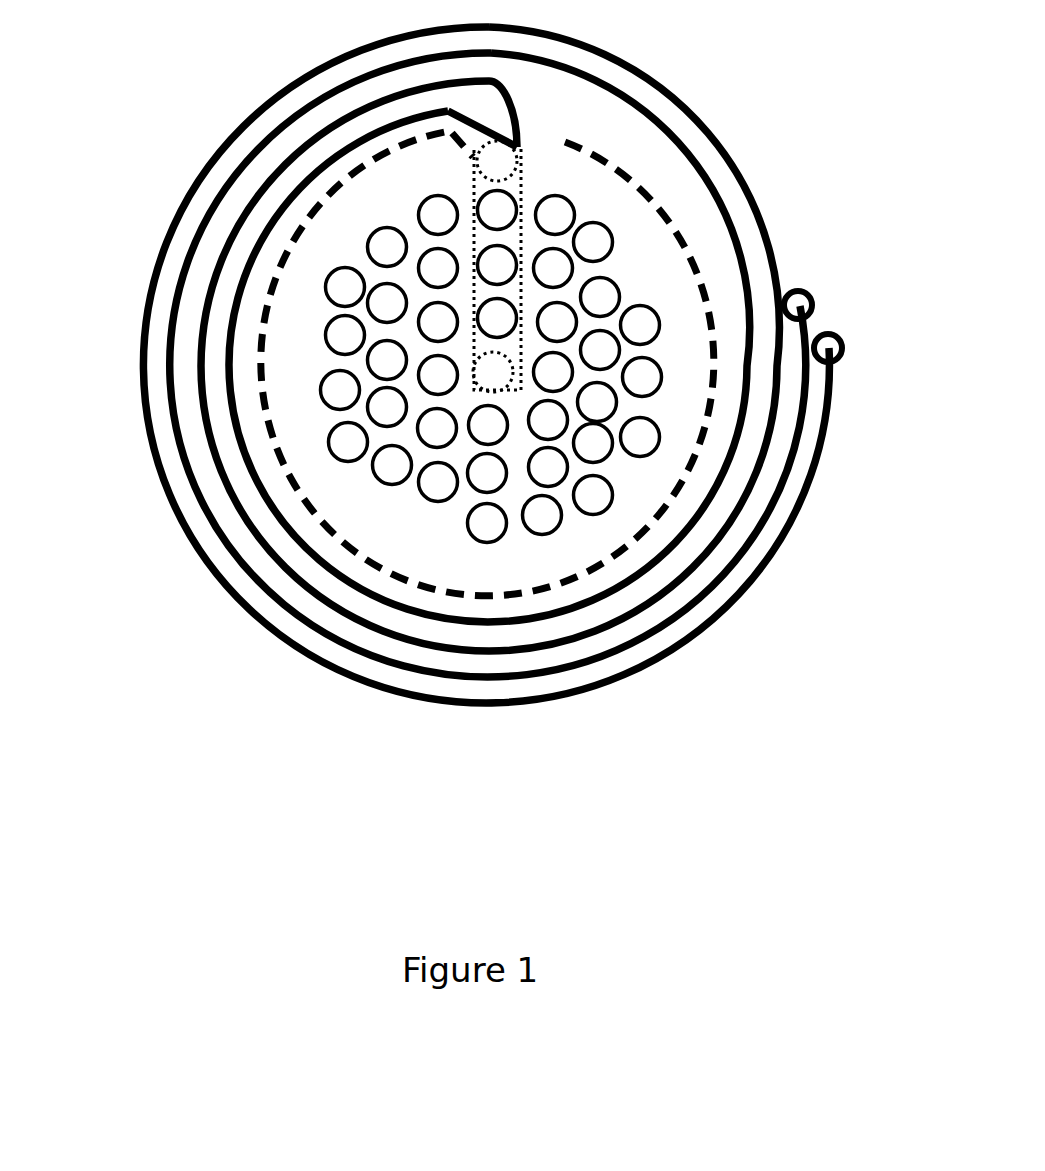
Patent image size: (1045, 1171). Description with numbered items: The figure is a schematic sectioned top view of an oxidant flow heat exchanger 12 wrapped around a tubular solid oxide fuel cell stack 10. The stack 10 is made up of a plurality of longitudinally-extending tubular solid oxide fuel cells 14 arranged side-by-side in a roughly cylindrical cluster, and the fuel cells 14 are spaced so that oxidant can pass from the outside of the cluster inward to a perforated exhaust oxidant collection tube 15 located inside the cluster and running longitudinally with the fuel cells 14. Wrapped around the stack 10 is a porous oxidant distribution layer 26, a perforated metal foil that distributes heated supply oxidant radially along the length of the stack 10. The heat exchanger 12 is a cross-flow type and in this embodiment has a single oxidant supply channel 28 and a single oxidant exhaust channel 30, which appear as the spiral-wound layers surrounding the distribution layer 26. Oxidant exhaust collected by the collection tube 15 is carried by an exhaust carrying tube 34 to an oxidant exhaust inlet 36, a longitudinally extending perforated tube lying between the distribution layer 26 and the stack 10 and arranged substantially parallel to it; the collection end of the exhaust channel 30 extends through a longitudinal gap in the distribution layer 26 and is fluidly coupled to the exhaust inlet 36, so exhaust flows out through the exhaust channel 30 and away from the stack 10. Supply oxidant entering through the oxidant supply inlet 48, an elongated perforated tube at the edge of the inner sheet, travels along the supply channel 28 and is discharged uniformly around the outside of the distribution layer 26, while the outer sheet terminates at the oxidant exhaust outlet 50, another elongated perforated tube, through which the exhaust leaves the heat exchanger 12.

The solid oxide fuel cell stack 10 is at (302, 330).
The oxidant flow heat exchanger 12 is at (770, 596).
The tubular solid oxide fuel cells 14 is at (322, 282).
The perforated exhaust oxidant collection tube 15 is at (470, 378).
The porous oxidant distribution layer 26 is at (318, 208).
The oxidant supply channel 28 is at (776, 463).
The oxidant exhaust channel 30 is at (820, 403).
The exhaust carrying tube 34 is at (523, 176).
The oxidant exhaust inlet 36 is at (521, 146).
The oxidant supply inlet 48 is at (799, 288).
The oxidant exhaust outlet 50 is at (845, 345).